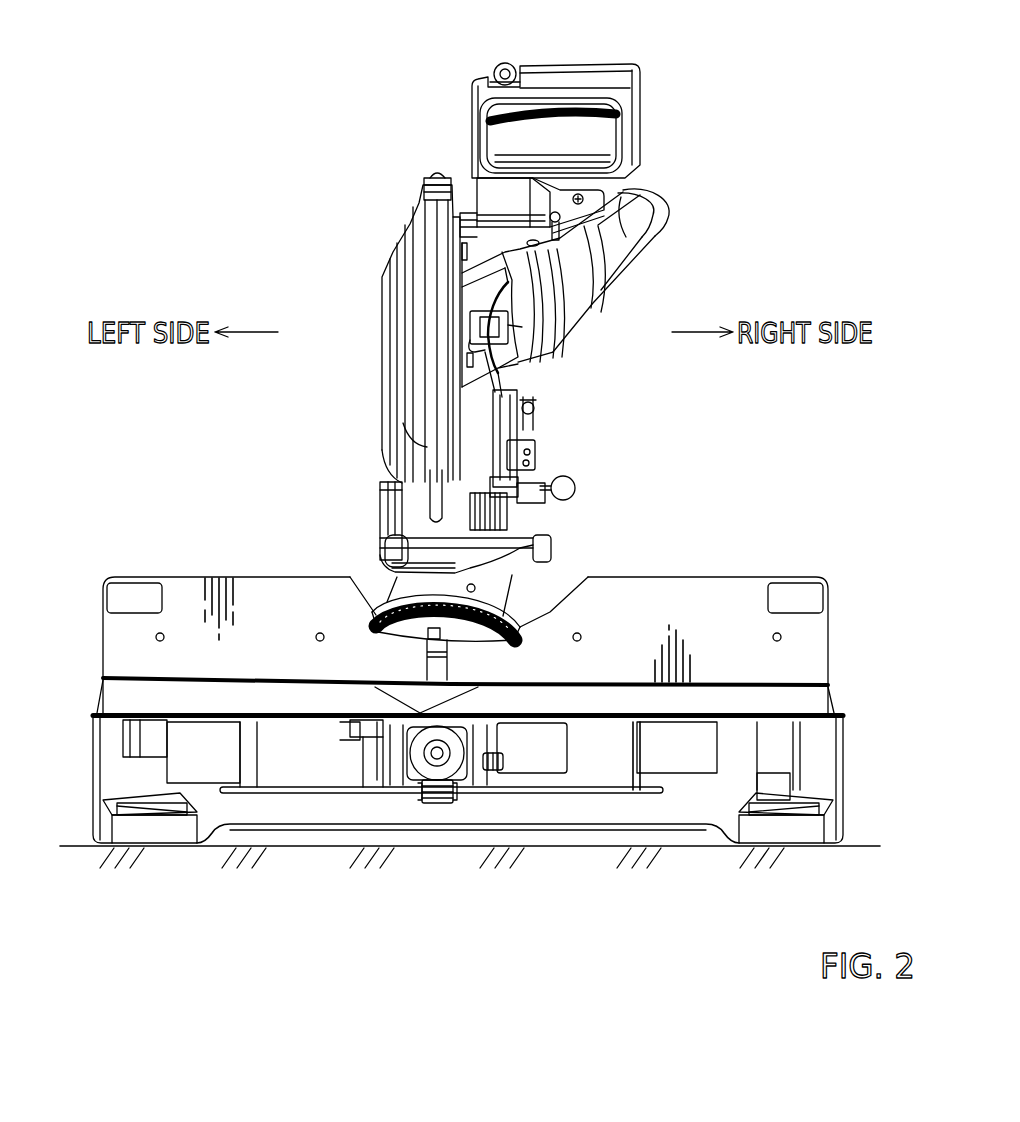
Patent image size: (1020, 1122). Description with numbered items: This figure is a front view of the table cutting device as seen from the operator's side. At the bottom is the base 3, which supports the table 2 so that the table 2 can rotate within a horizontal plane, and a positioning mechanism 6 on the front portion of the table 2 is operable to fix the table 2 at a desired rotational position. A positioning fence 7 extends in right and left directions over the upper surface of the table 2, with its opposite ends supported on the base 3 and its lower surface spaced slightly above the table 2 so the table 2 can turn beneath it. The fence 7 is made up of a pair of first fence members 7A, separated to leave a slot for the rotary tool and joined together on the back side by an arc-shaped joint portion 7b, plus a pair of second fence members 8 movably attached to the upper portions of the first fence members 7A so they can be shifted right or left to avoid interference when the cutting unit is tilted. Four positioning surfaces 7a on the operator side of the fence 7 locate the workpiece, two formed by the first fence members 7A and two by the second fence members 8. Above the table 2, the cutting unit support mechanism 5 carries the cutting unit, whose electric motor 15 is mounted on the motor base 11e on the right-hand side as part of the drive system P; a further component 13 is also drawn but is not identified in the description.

The table 2 is at (578, 757).
The base 3 is at (320, 813).
The cutting unit support mechanism 5 is at (360, 533).
The positioning mechanism 6 is at (438, 805).
The positioning fence 7 is at (660, 577).
The first fence members 7A is at (267, 700).
The positioning surfaces 7a is at (137, 642).
The arc-shaped joint portion 7b is at (440, 698).
The second fence members 8 is at (688, 607).
The motor base 11e is at (507, 350).
The blade case 13 is at (430, 250).
The electric motor 15 is at (615, 257).
The drive system P is at (586, 340).